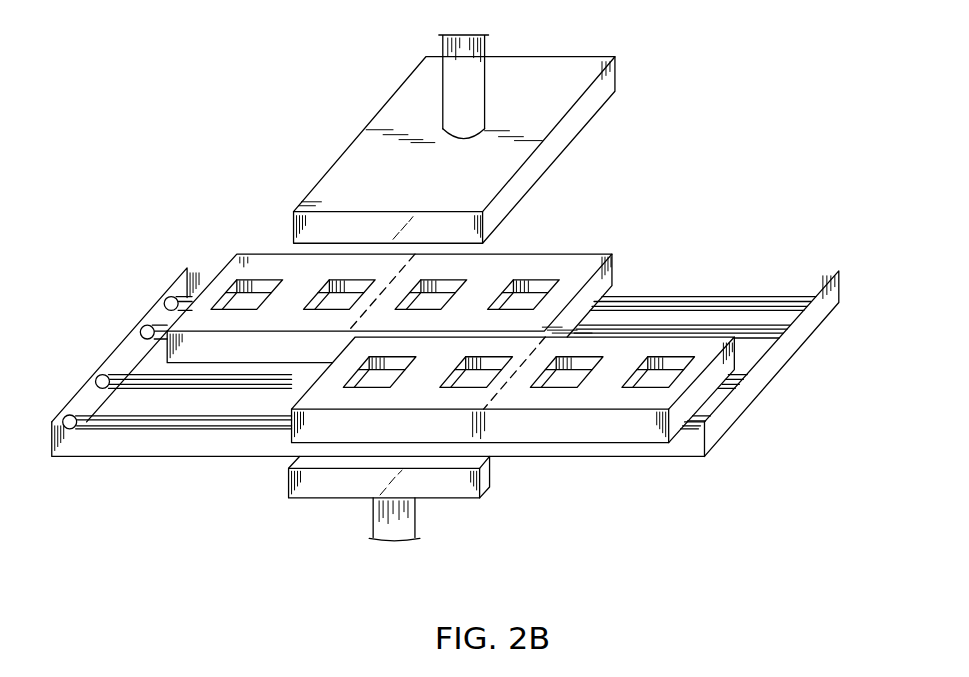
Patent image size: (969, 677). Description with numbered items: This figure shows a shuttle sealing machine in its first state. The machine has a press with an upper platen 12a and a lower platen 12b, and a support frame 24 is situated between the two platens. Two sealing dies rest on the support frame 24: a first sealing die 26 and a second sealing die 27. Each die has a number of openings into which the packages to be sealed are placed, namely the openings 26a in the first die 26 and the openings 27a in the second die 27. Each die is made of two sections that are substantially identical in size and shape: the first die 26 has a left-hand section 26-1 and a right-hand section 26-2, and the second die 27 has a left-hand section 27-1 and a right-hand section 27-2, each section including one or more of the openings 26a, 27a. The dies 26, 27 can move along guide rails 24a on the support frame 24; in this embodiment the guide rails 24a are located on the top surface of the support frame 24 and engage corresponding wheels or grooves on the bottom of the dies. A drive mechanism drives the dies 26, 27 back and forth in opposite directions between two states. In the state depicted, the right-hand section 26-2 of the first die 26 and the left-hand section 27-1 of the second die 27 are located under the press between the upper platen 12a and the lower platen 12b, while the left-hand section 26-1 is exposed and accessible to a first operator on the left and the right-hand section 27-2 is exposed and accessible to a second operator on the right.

The upper platen 12a is at (538, 156).
The lower platen 12b is at (488, 476).
The support frame 24 is at (829, 270).
The guide rail 24a is at (768, 334).
The first sealing die 26 is at (203, 300).
The left-hand section of the first die 26-1 is at (304, 256).
The right-hand section of the first die 26-2 is at (605, 264).
The opening 26a is at (273, 257).
The second sealing die 27 is at (702, 385).
The left-hand section of the second die 27-1 is at (350, 418).
The right-hand section of the second die 27-2 is at (632, 435).
The opening 27a is at (352, 430).